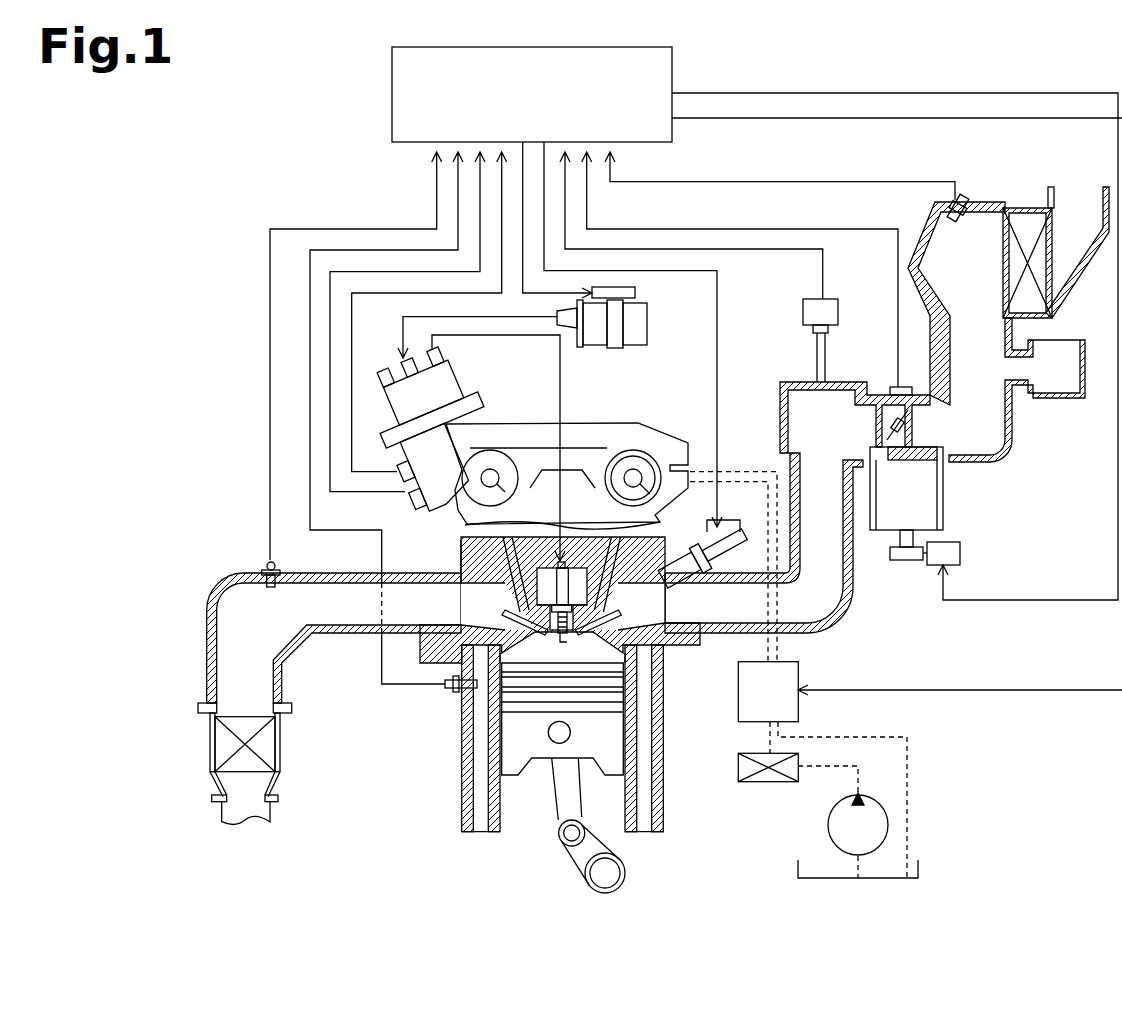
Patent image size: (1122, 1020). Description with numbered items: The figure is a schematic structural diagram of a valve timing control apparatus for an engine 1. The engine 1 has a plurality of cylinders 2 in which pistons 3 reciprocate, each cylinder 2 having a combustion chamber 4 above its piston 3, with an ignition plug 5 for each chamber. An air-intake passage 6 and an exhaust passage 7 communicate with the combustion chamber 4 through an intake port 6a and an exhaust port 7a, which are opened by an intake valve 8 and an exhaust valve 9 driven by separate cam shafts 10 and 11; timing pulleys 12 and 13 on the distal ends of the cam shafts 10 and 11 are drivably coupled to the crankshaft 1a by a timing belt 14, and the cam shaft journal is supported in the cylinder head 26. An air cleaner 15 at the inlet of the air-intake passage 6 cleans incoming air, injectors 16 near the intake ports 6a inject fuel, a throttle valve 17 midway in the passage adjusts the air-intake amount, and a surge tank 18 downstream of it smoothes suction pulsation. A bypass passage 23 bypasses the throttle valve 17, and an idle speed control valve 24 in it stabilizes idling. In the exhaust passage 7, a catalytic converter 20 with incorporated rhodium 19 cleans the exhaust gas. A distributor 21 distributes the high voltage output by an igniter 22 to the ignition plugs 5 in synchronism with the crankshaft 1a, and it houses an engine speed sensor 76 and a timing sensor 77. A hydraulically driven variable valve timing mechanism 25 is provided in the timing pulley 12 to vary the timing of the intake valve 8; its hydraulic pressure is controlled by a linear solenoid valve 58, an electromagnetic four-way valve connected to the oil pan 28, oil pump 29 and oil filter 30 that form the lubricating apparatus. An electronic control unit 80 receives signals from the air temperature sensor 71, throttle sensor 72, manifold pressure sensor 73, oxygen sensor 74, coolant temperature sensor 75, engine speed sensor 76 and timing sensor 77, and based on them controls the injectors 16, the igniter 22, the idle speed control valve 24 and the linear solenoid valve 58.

The engine 1 is at (673, 775).
The crankshaft 1a is at (612, 875).
The cylinder 2 is at (515, 798).
The piston 3 is at (520, 746).
The combustion chamber 4 is at (655, 692).
The ignition plug 5 is at (572, 573).
The air-intake passage 6 is at (843, 628).
The intake port 6a is at (672, 645).
The exhaust passage 7 is at (335, 585).
The exhaust port 7a is at (450, 635).
The intake valve 8 is at (610, 616).
The exhaust valve 9 is at (512, 616).
The cam shaft 10 is at (645, 484).
The cam shaft 11 is at (503, 490).
The timing pulley 12 is at (667, 447).
The timing pulley 13 is at (482, 438).
The timing belt 14 is at (560, 425).
The air cleaner 15 is at (1046, 238).
The injector 16 is at (740, 527).
The throttle valve 17 is at (905, 418).
The surge tank 18 is at (792, 388).
The catalytic converter rhodium 19 is at (268, 755).
The catalytic converter 20 is at (278, 745).
The distributor 21 is at (458, 387).
The igniter 22 is at (648, 322).
The bypass passage 23 is at (945, 500).
The idle speed control valve (ISCV) 24 is at (960, 553).
The variable valve timing mechanism (VVT) 25 is at (628, 448).
The cylinder head 26 is at (460, 552).
The oil pan 28 is at (920, 868).
The oil pump 29 is at (828, 846).
The oil filter 30 is at (768, 782).
The linear solenoid valve (LSV) 58 is at (799, 710).
The air temperature sensor 71 is at (965, 200).
The throttle sensor 72 is at (890, 387).
The manifold pressure sensor 73 is at (803, 312).
The oxygen sensor 74 is at (265, 565).
The coolant temperature sensor 75 is at (448, 690).
The engine speed sensor 76 is at (397, 476).
The timing sensor 77 is at (412, 496).
The electronic control unit (ECU) 80 is at (392, 84).